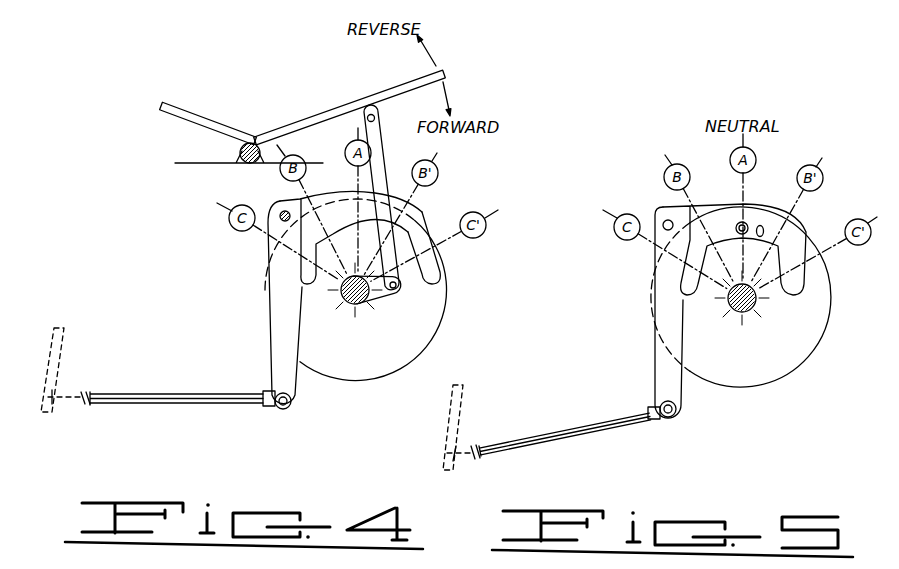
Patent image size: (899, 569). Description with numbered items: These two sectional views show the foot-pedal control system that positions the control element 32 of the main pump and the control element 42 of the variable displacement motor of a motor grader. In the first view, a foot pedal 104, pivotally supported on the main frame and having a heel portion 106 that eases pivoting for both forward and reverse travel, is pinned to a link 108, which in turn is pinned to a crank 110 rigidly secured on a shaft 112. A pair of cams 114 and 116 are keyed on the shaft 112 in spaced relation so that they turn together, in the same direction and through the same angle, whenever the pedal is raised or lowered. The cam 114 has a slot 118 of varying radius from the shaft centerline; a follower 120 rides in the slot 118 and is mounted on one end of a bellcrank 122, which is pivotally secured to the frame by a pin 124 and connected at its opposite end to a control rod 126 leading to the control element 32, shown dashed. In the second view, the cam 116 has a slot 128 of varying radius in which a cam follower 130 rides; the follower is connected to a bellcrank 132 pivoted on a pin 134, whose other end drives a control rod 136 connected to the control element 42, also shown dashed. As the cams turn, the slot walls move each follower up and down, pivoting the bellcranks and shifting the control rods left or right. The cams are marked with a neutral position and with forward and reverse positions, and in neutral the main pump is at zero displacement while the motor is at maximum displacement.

In FIG. 4, the control element 32 is at (64, 337).
In FIG. 5, the control element 42 is at (464, 386).
In FIG. 4, the foot pedal 104 is at (340, 105).
In FIG. 4, the heel portion 106 is at (191, 101).
In FIG. 4, the link 108 is at (376, 143).
In FIG. 4, the crank 110 is at (386, 294).
In FIG. 4, the shaft 112 is at (350, 313).
In FIG. 5, the shaft 112 is at (751, 313).
In FIG. 4, the cam 114 is at (433, 295).
In FIG. 5, the cam 116 is at (811, 348).
In FIG. 4, the slot 118 is at (428, 213).
In FIG. 4, the follower 120 is at (352, 200).
In FIG. 4, the bellcrank 122 is at (275, 200).
In FIG. 4, the pin 124 is at (283, 222).
In FIG. 4, the control rod 126 is at (172, 394).
In FIG. 5, the slot 128 is at (762, 224).
In FIG. 5, the cam follower 130 is at (734, 222).
In FIG. 5, the bellcrank 132 is at (660, 209).
In FIG. 5, the pin 134 is at (665, 229).
In FIG. 5, the control rod 136 is at (584, 424).